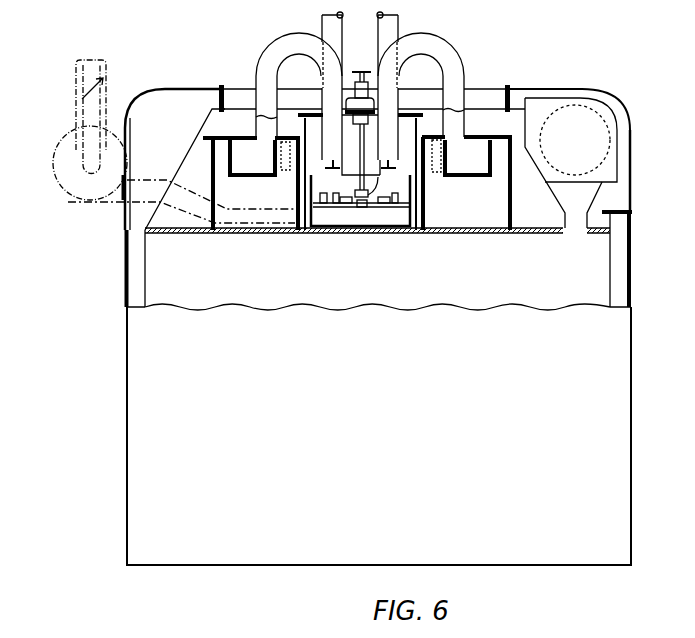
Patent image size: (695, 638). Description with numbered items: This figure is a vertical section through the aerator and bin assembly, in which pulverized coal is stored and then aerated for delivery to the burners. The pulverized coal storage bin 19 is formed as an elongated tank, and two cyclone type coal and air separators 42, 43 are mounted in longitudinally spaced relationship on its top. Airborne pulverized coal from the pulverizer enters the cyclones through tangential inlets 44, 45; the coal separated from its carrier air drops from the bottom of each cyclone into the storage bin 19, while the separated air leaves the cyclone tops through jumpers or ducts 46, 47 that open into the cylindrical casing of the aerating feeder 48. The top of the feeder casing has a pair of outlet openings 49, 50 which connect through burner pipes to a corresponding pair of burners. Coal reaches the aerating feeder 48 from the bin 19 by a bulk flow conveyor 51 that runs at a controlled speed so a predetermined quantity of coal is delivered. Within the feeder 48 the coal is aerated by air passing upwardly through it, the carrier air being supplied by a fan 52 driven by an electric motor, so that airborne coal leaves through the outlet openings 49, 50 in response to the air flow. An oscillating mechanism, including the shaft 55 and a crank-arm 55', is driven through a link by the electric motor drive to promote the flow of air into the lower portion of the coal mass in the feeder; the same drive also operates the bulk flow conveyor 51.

The pulverized coal storage bin 19 is at (378, 401).
The cyclone type coal and air separator 42 is at (513, 203).
The cyclone type coal and air separator 43 is at (210, 182).
The tangential inlet 44 is at (289, 170).
The tangential inlet 45 is at (436, 172).
The jumper or duct 46 is at (268, 56).
The jumper or duct 47 is at (447, 42).
The aerating feeder 48 is at (308, 184).
The outlet opening 49 is at (323, 27).
The outlet opening 50 is at (398, 28).
The bulk flow conveyor 51 is at (133, 260).
The fan 52 is at (60, 141).
The shaft 55 is at (361, 196).
The crank-arm 55' is at (363, 76).